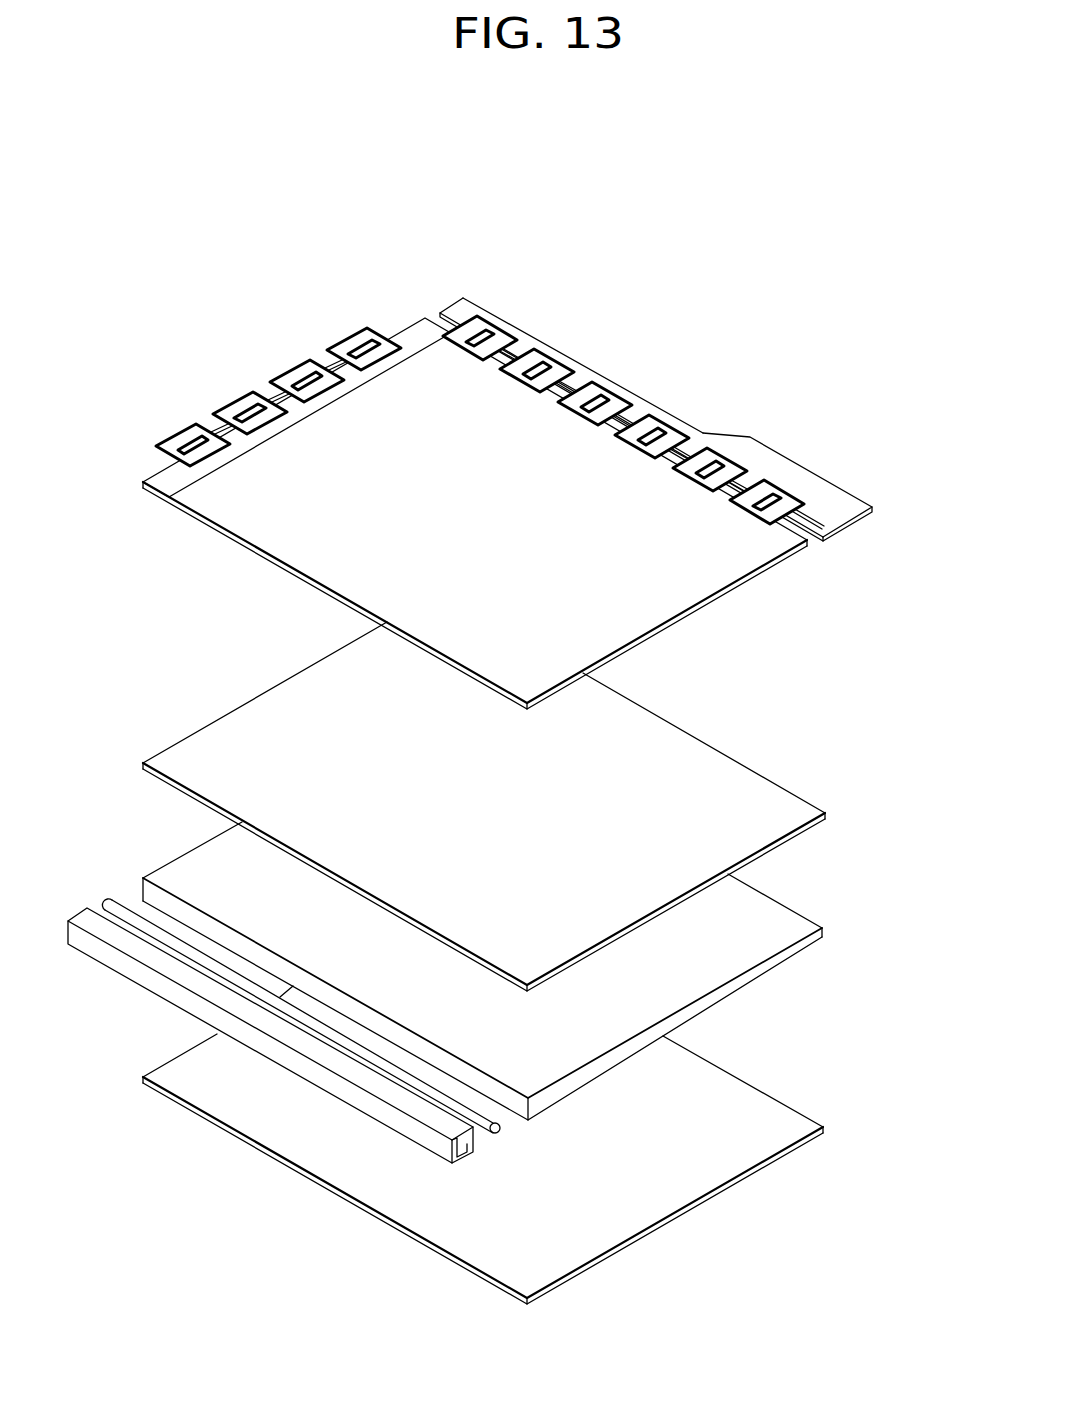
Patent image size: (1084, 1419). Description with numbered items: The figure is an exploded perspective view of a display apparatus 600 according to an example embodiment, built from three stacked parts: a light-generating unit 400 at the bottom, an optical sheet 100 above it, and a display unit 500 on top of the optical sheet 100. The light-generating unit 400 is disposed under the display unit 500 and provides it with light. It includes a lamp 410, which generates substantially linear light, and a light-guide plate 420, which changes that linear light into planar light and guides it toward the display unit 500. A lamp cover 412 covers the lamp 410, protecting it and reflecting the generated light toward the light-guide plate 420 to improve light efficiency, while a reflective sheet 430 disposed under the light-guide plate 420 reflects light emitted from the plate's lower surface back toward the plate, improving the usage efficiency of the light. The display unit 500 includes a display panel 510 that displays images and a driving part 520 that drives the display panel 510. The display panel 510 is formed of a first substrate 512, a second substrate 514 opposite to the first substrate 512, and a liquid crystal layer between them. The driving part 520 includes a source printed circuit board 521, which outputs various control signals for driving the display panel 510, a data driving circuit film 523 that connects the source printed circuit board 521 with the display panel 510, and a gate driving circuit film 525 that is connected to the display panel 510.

The optical sheet 100 is at (808, 810).
The light-generating unit 400 is at (880, 1115).
The lamp 410 is at (497, 1133).
The lamp cover 412 is at (392, 1118).
The light-guide plate 420 is at (172, 848).
The reflective sheet 430 is at (790, 1118).
The display unit 500 is at (237, 358).
The display panel 510 is at (138, 563).
The first substrate 512 is at (168, 483).
The second substrate 514 is at (220, 503).
The driving part 520 is at (545, 338).
The source printed circuit board 521 is at (748, 450).
The data driving circuit film 523 is at (607, 402).
The gate driving circuit film 525 is at (355, 342).
The display device 600 is at (613, 228).